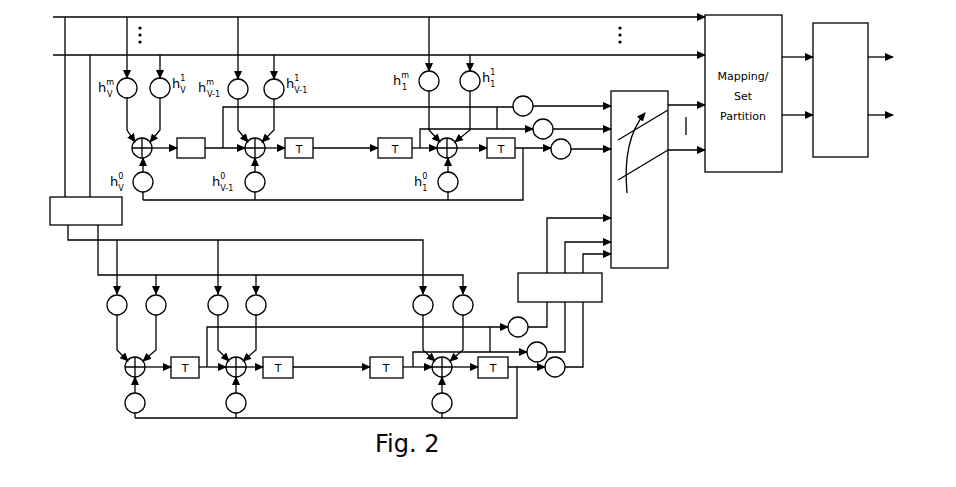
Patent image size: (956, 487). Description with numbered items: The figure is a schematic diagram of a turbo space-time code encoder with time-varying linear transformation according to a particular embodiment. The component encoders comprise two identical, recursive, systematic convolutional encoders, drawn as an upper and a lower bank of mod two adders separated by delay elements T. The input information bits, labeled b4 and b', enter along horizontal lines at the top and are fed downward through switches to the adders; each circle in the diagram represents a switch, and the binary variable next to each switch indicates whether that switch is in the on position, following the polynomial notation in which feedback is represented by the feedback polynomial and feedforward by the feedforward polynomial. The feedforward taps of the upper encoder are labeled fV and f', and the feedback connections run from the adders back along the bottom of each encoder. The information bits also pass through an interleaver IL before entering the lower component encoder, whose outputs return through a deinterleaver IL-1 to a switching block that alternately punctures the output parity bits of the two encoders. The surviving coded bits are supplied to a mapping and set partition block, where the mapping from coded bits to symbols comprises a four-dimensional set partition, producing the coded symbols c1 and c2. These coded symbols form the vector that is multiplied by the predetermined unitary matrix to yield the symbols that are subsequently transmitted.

The input bit stream b4 is at (367, 17).
The input bit stream b' is at (367, 55).
The delay element T is at (191, 148).
The interleaver IL is at (86, 211).
The deinterleaver IL-1 is at (560, 287).
The output f^V fV is at (562, 101).
The output f' is at (581, 157).
The coded symbol c1 is at (797, 49).
The coded symbol c2 is at (797, 107).